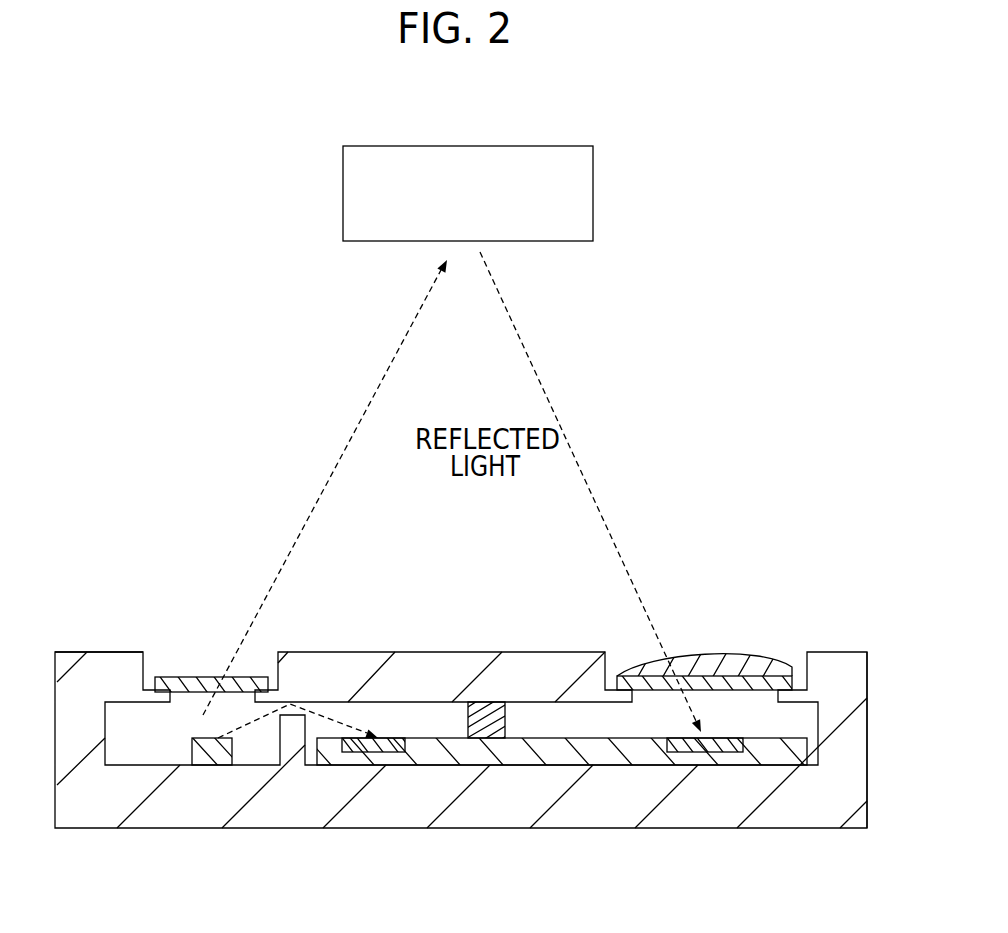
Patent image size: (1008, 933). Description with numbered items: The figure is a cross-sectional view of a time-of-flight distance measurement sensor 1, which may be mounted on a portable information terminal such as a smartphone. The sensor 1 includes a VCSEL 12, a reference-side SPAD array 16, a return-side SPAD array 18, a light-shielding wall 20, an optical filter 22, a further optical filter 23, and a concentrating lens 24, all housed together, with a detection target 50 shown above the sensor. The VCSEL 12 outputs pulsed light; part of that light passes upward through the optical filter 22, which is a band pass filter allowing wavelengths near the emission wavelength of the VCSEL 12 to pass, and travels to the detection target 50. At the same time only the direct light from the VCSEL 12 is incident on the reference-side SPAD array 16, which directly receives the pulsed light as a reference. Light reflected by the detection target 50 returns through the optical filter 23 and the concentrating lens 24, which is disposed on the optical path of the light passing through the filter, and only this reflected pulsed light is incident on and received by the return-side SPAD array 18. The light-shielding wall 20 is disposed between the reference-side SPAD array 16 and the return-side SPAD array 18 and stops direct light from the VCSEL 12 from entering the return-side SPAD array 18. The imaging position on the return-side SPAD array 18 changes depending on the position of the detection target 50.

The TOF distance measurement sensor 1 is at (825, 154).
The VCSEL 12 is at (213, 765).
The reference-side SPAD array 16 is at (377, 765).
The return-side SPAD array 18 is at (707, 752).
The light-shielding wall 20 is at (488, 725).
The optical filter 22 is at (198, 677).
The optical filter 23 is at (767, 682).
The concentrating lens 24 is at (703, 660).
The detection target 50 is at (593, 191).